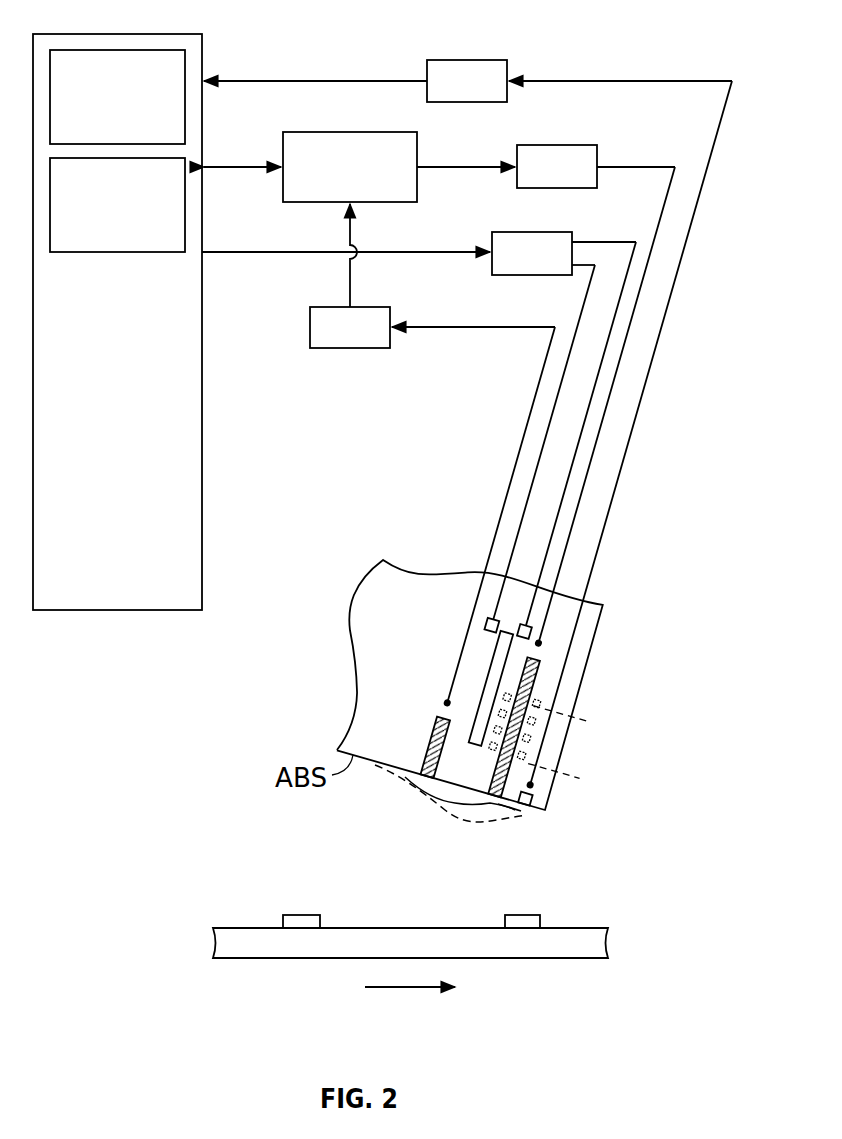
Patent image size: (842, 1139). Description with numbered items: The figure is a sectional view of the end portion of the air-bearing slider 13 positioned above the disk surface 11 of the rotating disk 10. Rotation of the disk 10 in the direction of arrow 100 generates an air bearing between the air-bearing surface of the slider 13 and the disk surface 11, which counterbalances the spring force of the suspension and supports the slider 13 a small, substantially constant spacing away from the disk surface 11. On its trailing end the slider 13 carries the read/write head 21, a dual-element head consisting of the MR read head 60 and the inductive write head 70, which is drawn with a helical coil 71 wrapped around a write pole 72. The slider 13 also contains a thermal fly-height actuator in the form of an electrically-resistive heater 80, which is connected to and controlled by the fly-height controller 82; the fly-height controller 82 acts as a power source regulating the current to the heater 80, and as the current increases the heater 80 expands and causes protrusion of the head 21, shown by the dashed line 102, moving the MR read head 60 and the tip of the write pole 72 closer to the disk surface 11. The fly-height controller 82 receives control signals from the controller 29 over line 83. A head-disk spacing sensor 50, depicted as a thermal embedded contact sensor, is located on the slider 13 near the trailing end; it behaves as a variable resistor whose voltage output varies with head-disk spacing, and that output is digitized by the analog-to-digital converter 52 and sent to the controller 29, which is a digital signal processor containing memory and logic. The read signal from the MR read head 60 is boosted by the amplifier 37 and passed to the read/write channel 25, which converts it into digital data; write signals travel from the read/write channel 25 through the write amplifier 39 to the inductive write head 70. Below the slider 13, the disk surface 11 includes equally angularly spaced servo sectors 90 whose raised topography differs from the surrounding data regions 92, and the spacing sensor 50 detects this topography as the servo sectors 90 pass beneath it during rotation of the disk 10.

The controller 29 is at (75, 34).
The analog-to-digital converter 52 is at (465, 60).
The read/write channel 25 is at (340, 132).
The write amplifier 39 is at (558, 145).
The fly-height controller 82 is at (528, 232).
The line 83 is at (282, 252).
The amplifier 37 is at (347, 348).
The slider 13 is at (423, 566).
The heater 80 is at (491, 672).
The write head 70 is at (553, 664).
The helical coil 71 is at (585, 727).
The MR read head 60 is at (437, 737).
The head-disk spacing sensor 50 is at (533, 807).
The write pole 72 is at (505, 815).
The dashed line 102 is at (447, 800).
The read/write head 21 is at (453, 807).
The disk 10 is at (557, 957).
The disk surface 11 is at (565, 927).
The servo sectors 90 is at (302, 913).
The data regions 92 is at (267, 927).
The arrow 100 is at (413, 987).